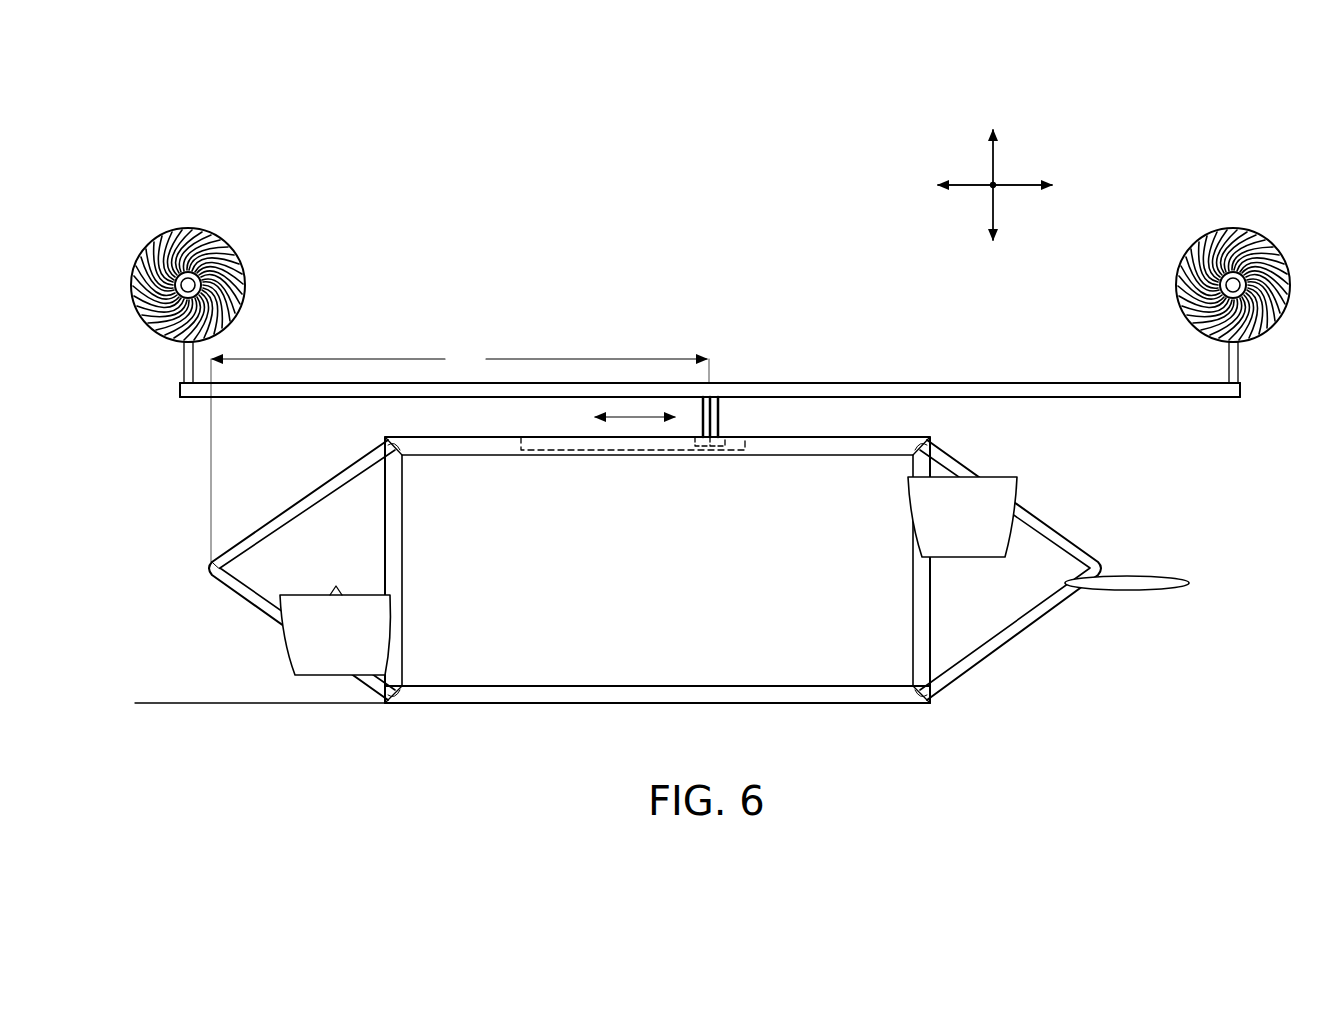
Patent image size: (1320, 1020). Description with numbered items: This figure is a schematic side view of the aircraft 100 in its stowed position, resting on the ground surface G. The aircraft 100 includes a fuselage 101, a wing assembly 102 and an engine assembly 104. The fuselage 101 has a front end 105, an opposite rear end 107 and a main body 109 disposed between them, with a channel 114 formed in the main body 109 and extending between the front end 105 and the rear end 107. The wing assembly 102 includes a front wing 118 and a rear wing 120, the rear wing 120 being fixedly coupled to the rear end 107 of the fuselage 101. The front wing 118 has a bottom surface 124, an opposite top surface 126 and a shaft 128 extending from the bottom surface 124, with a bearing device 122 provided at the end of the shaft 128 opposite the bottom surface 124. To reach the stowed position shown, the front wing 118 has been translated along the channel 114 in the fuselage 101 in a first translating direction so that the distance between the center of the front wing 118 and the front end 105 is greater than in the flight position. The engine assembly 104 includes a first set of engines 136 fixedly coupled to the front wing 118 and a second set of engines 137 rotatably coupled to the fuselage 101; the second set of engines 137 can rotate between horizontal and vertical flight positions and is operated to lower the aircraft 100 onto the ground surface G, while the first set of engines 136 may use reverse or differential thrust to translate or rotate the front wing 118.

The aircraft 100 is at (328, 148).
The fuselage 101 is at (629, 622).
The wing assembly 102 is at (710, 355).
The engine assembly 104 is at (700, 412).
The front end 105 is at (230, 597).
The rear end 107 is at (1013, 648).
The main body 109 is at (808, 703).
The channel 114 is at (537, 452).
The front wing 118 is at (851, 380).
The rear wing 120 is at (1178, 577).
The bearing device 122 is at (717, 452).
The bottom surface 124 is at (350, 398).
The top surface 126 is at (495, 383).
The shaft 128 is at (718, 428).
The first set of engines 136 is at (142, 242).
The second set of engines 137 is at (282, 650).
The ground surface G is at (172, 703).